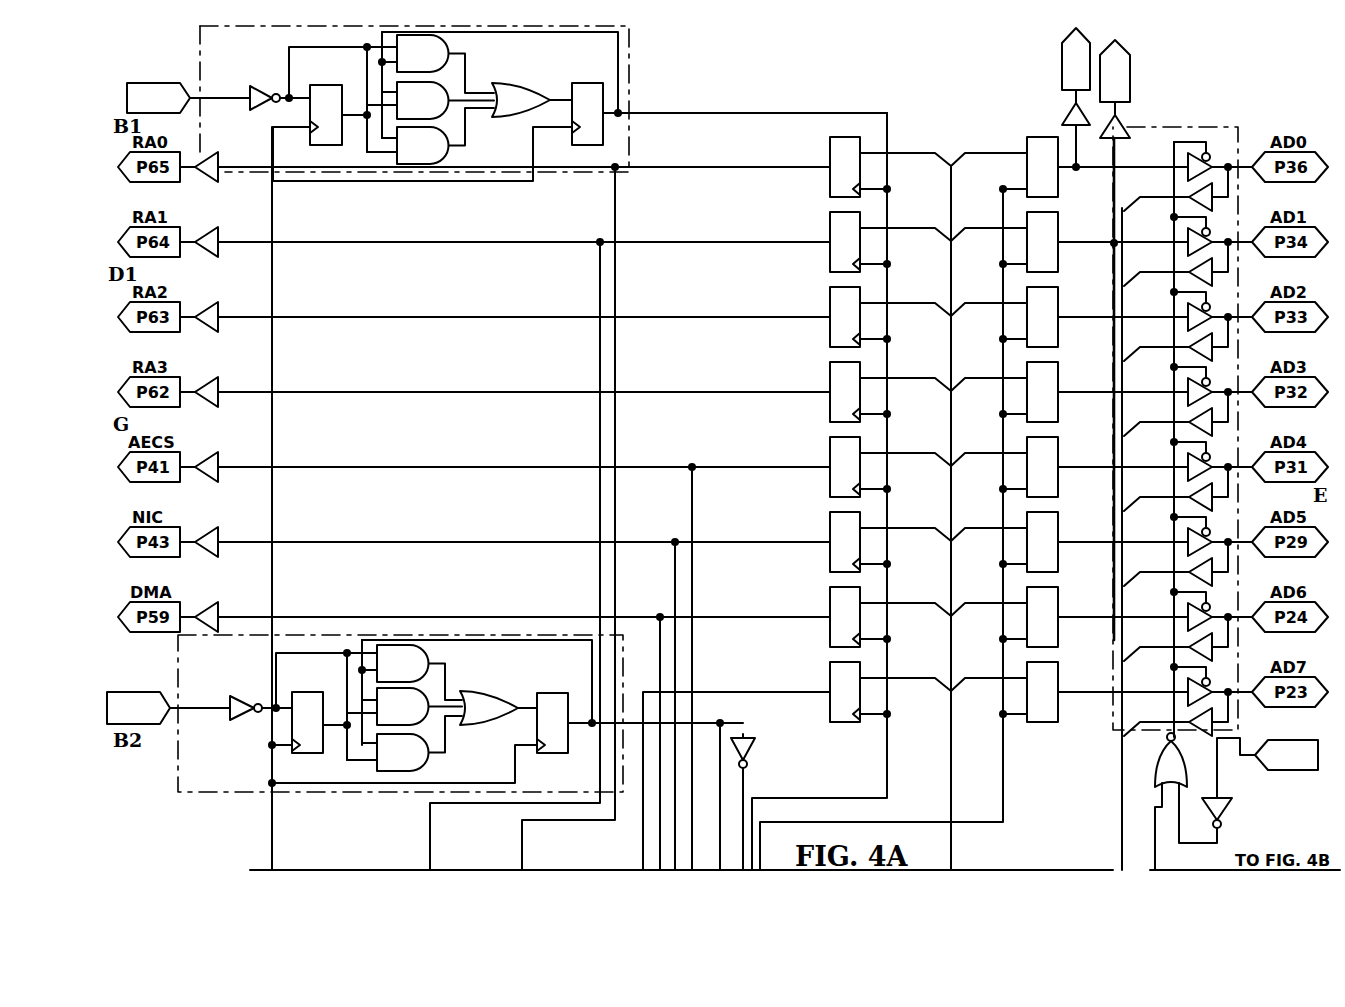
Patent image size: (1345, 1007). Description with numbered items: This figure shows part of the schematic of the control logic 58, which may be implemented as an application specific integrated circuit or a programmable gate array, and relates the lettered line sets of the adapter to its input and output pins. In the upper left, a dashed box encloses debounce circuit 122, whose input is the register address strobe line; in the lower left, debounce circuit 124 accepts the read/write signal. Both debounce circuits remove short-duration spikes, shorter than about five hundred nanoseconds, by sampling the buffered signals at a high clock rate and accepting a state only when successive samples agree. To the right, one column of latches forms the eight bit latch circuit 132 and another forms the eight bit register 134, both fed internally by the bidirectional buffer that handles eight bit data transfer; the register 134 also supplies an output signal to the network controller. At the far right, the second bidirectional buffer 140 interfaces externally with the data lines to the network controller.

The debounce circuit 122 is at (200, 56).
The debounce circuit 124 is at (178, 755).
The eight bit latch circuit 132 is at (1022, 118).
The eight bit register 134 is at (862, 107).
The second bidirectional buffer 140 is at (1186, 127).
The control logic 58 is at (1303, 94).